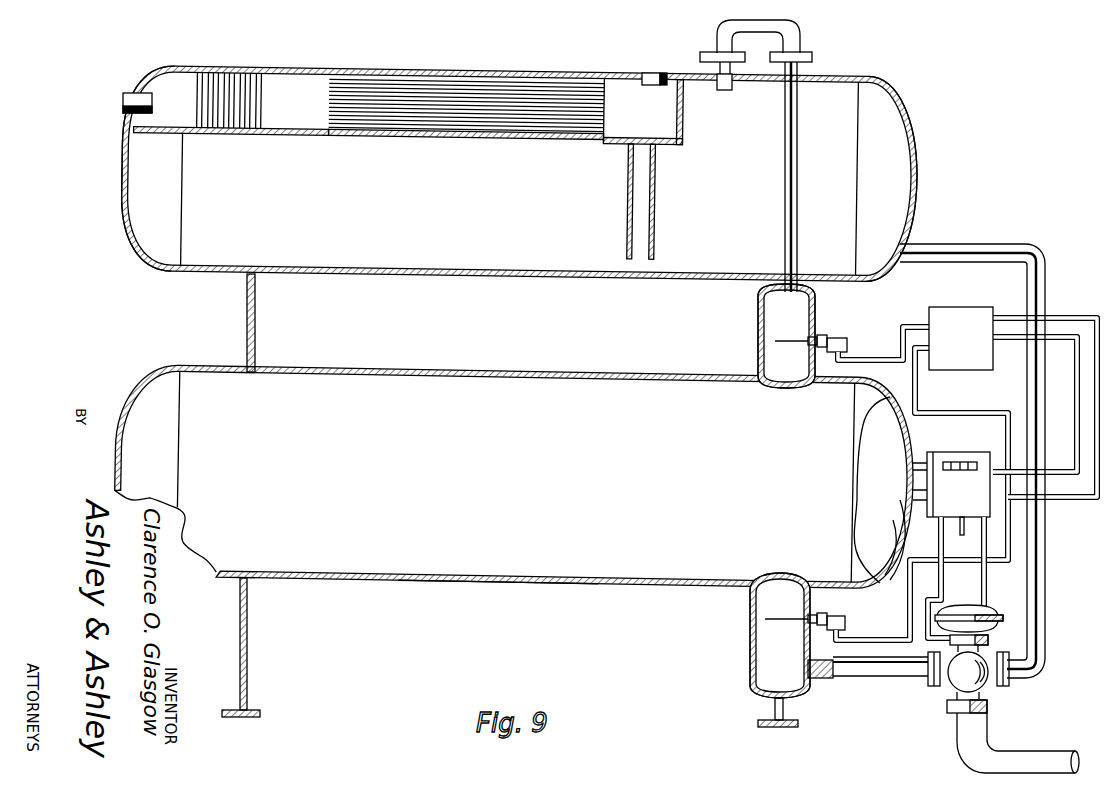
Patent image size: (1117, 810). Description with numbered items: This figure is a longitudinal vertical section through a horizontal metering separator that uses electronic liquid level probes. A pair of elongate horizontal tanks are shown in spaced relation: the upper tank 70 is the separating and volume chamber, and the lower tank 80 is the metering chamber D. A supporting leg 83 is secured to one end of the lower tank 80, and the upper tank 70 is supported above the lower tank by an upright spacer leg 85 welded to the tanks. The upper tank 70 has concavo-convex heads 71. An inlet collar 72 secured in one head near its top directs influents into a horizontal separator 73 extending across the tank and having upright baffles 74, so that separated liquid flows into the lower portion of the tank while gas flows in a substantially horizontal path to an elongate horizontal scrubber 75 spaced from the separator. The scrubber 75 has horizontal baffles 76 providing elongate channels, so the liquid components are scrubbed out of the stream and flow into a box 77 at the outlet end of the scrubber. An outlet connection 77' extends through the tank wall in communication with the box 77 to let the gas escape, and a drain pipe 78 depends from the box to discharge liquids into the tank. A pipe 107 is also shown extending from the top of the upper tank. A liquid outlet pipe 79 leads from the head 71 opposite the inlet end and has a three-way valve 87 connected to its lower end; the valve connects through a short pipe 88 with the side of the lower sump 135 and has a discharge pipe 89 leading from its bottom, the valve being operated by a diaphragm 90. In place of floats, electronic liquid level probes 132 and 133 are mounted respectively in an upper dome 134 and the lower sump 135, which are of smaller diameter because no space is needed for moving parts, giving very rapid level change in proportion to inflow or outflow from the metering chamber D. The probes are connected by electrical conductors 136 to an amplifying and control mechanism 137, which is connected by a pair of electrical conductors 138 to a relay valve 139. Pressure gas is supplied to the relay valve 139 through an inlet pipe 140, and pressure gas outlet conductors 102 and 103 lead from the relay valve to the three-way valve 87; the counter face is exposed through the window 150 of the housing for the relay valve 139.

The upper tank 70 is at (300, 71).
The concavo-convex heads 71 is at (916, 163).
The inlet collar 72 is at (122, 102).
The horizontal separator 73 is at (170, 131).
The upright baffles 74 is at (218, 124).
The horizontal scrubber 75 is at (368, 135).
The horizontal baffles 76 is at (443, 127).
The box 77 is at (661, 112).
The outlet connection 77' is at (639, 66).
The drain pipe 78 is at (628, 202).
The liquid outlet pipe 79 is at (972, 244).
The lower tank 80 is at (493, 371).
The supporting leg 83 is at (248, 612).
The spacer leg 85 is at (256, 328).
The three-way valve 87 is at (950, 683).
The short pipe 88 is at (872, 676).
The discharge pipe 89 is at (957, 758).
The diaphragm 90 is at (998, 618).
The pressure gas outlet conductor 102 is at (943, 575).
The pressure gas outlet conductor 103 is at (985, 575).
The pipe 107 is at (798, 152).
The electronic liquid level probe 132 is at (775, 342).
The electronic liquid level probe 133 is at (757, 603).
The upper dome 134 is at (758, 336).
The lower sump 135 is at (768, 619).
The electrical conductors 136 is at (880, 358).
The amplifying and control mechanism 137 is at (965, 296).
The electrical conductors 138 is at (1078, 510).
The relay valve 139 is at (970, 436).
The inlet pipe 140 is at (964, 528).
The window 150 is at (965, 471).
The metering chamber D is at (540, 570).